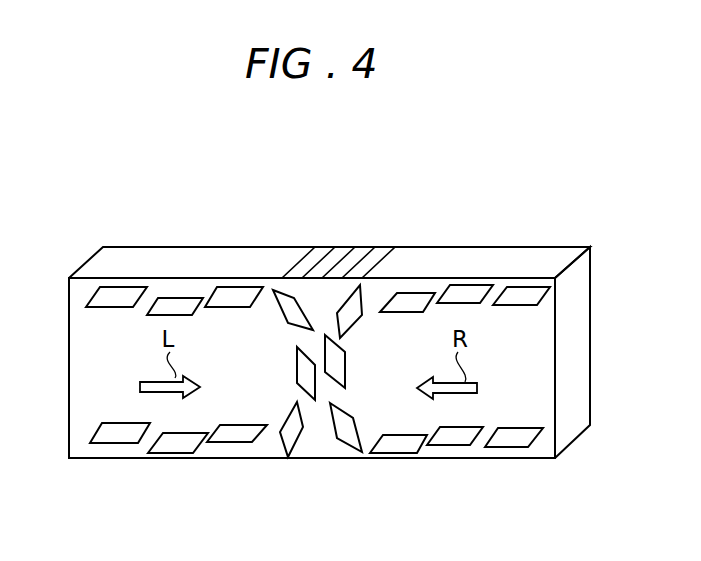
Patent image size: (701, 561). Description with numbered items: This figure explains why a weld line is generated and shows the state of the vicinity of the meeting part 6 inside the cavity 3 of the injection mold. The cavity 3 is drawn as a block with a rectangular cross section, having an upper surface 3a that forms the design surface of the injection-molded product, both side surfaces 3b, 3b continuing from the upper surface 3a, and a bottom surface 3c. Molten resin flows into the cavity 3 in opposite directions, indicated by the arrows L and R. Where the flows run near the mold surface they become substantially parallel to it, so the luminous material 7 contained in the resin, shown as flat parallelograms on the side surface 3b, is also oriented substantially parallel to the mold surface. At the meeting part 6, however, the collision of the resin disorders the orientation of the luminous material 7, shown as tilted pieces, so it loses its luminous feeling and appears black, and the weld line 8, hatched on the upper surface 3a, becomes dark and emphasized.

The cavity 3 is at (364, 346).
The upper surface 3a is at (483, 256).
The side surface 3b is at (592, 317).
The bottom surface 3c is at (568, 447).
The meeting part 6 is at (323, 445).
The luminous material 7 is at (108, 438).
The weld line 8 is at (352, 246).